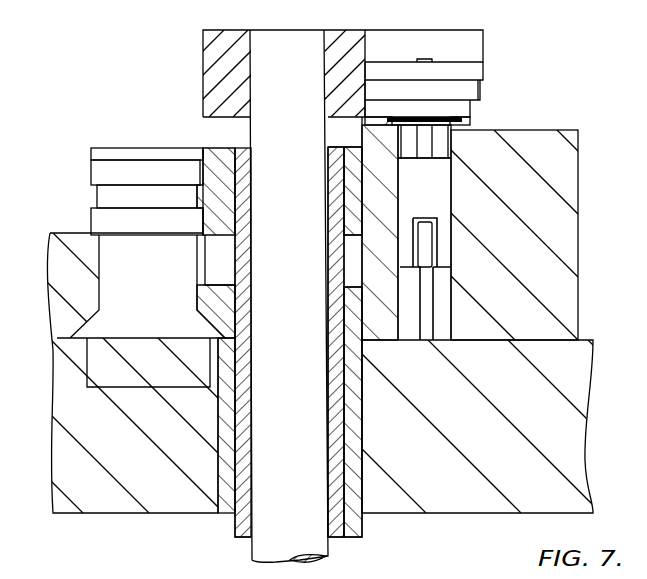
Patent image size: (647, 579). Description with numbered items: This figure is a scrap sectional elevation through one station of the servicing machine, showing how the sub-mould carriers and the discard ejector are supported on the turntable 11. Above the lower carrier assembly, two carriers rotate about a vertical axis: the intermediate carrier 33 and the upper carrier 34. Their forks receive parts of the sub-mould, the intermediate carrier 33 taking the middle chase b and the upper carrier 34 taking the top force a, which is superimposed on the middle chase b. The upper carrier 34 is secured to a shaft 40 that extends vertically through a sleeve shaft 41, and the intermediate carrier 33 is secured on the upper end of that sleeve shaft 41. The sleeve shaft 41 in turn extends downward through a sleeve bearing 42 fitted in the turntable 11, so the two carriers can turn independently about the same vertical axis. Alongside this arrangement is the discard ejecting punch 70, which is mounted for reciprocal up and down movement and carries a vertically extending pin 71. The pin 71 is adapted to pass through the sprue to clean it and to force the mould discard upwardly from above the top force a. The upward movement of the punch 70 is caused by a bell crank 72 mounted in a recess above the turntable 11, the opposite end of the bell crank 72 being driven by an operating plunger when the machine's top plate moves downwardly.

The turntable 11 is at (62, 438).
The intermediate carrier 33 is at (122, 174).
The middle chase b is at (160, 172).
The upper carrier 34 is at (470, 45).
The top force a is at (470, 72).
The shaft 40 is at (302, 85).
The sleeve shaft 41 is at (338, 437).
The sleeve bearing 42 is at (346, 394).
The discard ejecting punch 70 is at (365, 249).
The pin 71 is at (427, 147).
The bell crank 72 is at (420, 310).